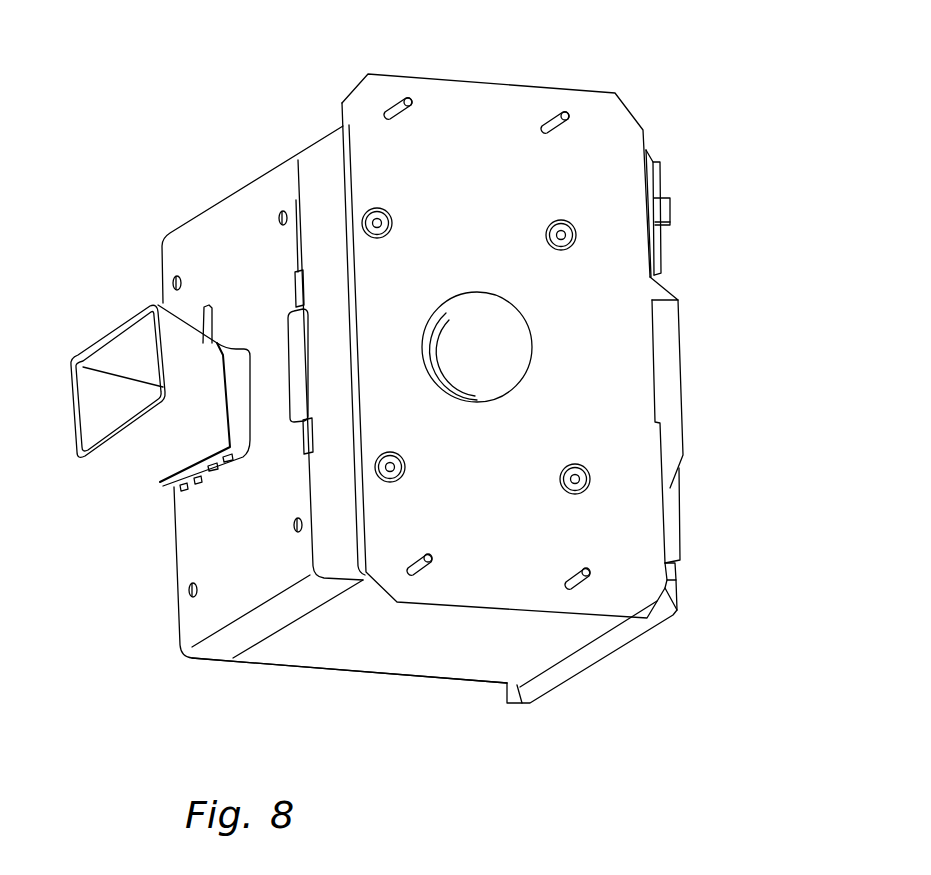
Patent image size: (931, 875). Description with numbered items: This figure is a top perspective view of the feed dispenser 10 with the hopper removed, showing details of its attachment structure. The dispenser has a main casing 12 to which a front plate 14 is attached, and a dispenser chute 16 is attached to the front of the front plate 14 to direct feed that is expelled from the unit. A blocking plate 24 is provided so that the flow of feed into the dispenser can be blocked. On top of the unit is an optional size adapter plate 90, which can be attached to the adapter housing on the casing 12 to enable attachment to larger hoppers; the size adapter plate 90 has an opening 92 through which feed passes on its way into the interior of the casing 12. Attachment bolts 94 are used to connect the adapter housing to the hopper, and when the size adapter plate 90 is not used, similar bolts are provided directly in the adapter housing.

The feed dispenser 10 is at (743, 433).
The main casing 12 is at (383, 662).
The front plate 14 is at (197, 618).
The dispenser chute 16 is at (77, 458).
The blocking plate 24 is at (297, 327).
The size adapter plate 90 is at (622, 108).
The opening 92 is at (510, 345).
The attachment bolts 94 is at (562, 113).